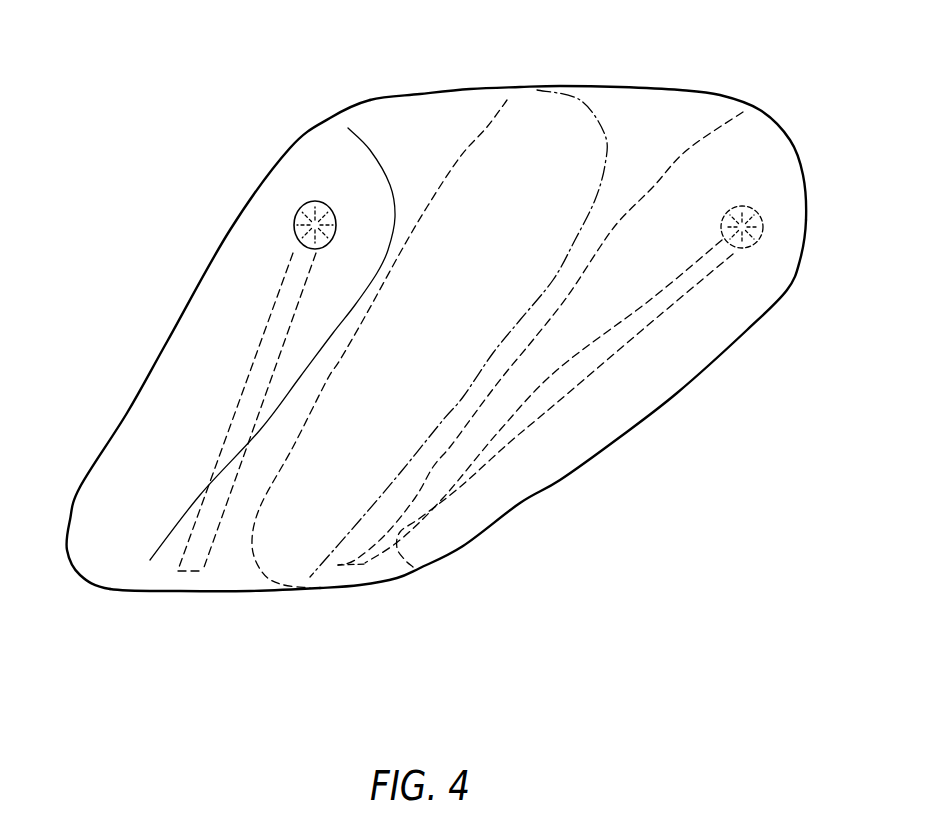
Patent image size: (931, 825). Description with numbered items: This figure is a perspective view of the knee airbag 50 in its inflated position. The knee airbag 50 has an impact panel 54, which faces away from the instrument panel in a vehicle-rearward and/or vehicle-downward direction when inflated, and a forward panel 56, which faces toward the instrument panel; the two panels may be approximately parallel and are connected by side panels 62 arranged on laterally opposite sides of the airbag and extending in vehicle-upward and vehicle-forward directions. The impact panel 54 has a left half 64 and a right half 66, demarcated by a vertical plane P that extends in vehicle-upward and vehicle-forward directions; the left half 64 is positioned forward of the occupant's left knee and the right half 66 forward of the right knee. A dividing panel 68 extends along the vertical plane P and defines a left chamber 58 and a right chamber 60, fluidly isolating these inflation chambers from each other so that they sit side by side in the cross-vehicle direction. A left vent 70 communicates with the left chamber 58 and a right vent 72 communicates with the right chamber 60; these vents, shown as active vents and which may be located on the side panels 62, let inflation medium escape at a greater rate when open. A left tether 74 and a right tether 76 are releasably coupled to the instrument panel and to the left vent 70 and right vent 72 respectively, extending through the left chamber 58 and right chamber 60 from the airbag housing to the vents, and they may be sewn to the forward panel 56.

The knee airbag 50 is at (128, 134).
The impact panel 54 is at (610, 447).
The forward panel 56 is at (188, 297).
The left chamber 58 is at (413, 120).
The right chamber 60 is at (668, 117).
The side panels 62 is at (130, 503).
The left half 64 is at (232, 560).
The right half 66 is at (450, 513).
The dividing panel 68 is at (507, 100).
The left vent 70 is at (314, 202).
The right vent 72 is at (750, 205).
The left tether 74 is at (237, 400).
The right tether 76 is at (637, 337).
The vertical plane P is at (602, 112).